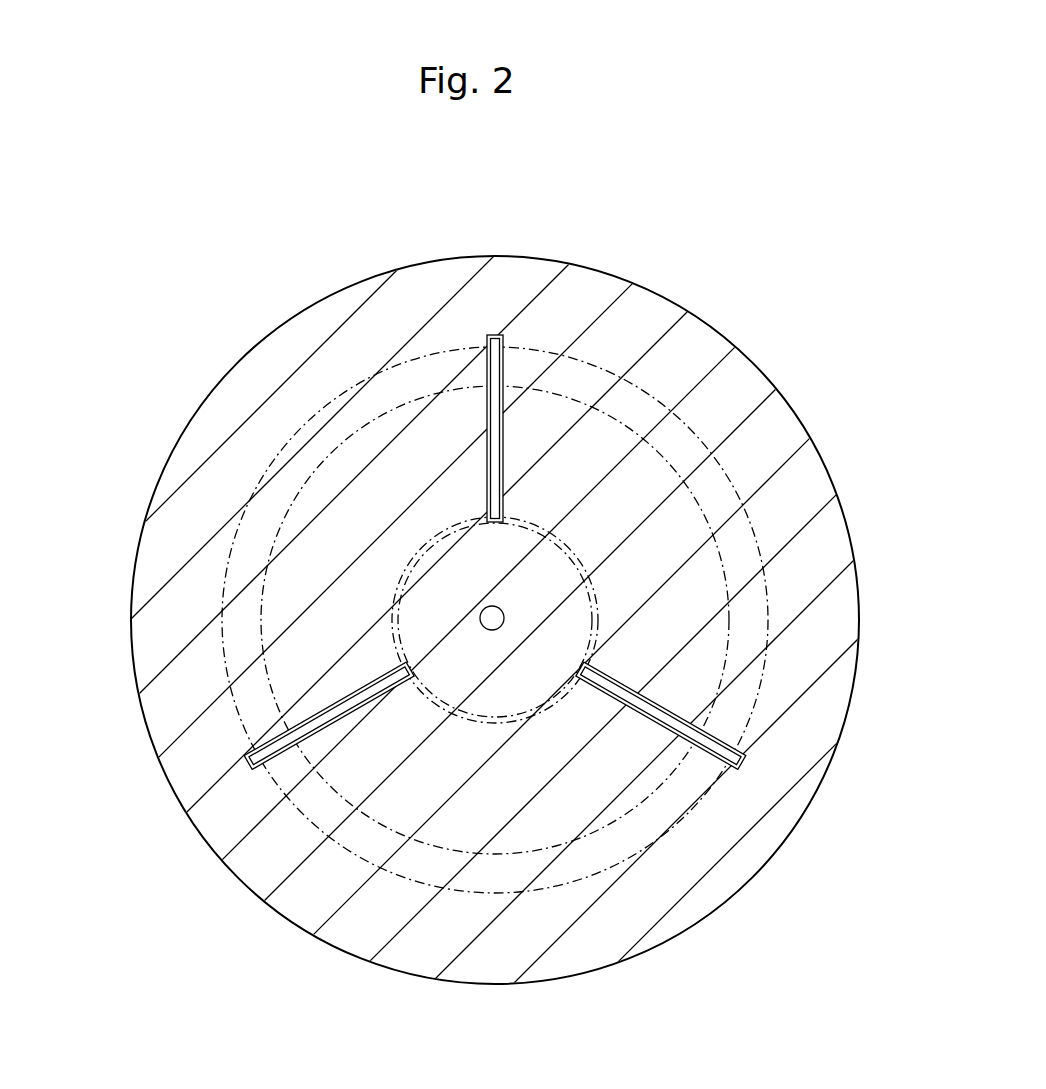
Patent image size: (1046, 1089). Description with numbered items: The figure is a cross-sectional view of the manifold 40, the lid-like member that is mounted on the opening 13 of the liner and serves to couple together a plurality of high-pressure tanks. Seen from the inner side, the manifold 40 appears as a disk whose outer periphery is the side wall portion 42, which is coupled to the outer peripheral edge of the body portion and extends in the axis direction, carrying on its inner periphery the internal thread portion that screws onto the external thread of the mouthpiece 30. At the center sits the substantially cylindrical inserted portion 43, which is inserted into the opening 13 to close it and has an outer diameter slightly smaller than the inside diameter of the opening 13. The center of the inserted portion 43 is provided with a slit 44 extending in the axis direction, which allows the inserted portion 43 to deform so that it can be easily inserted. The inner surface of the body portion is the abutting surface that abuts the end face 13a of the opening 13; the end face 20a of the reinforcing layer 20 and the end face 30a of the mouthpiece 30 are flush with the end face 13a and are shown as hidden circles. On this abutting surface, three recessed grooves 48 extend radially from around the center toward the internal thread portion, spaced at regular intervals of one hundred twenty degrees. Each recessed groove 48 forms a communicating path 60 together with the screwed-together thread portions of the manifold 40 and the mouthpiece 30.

The manifold 40 is at (667, 290).
The side wall portion 42 is at (293, 347).
The inserted portion 43 is at (557, 630).
The slit 44 is at (482, 612).
The recessed groove 48 is at (487, 408).
The communicating path 60 is at (495, 604).
The opening 13 is at (675, 613).
The end face of the opening 13a is at (570, 550).
The reinforcing layer 20 is at (417, 598).
The end face of the reinforcing layer 20a is at (350, 517).
The mouthpiece 30 is at (405, 620).
The end face of the mouthpiece 30a is at (253, 540).